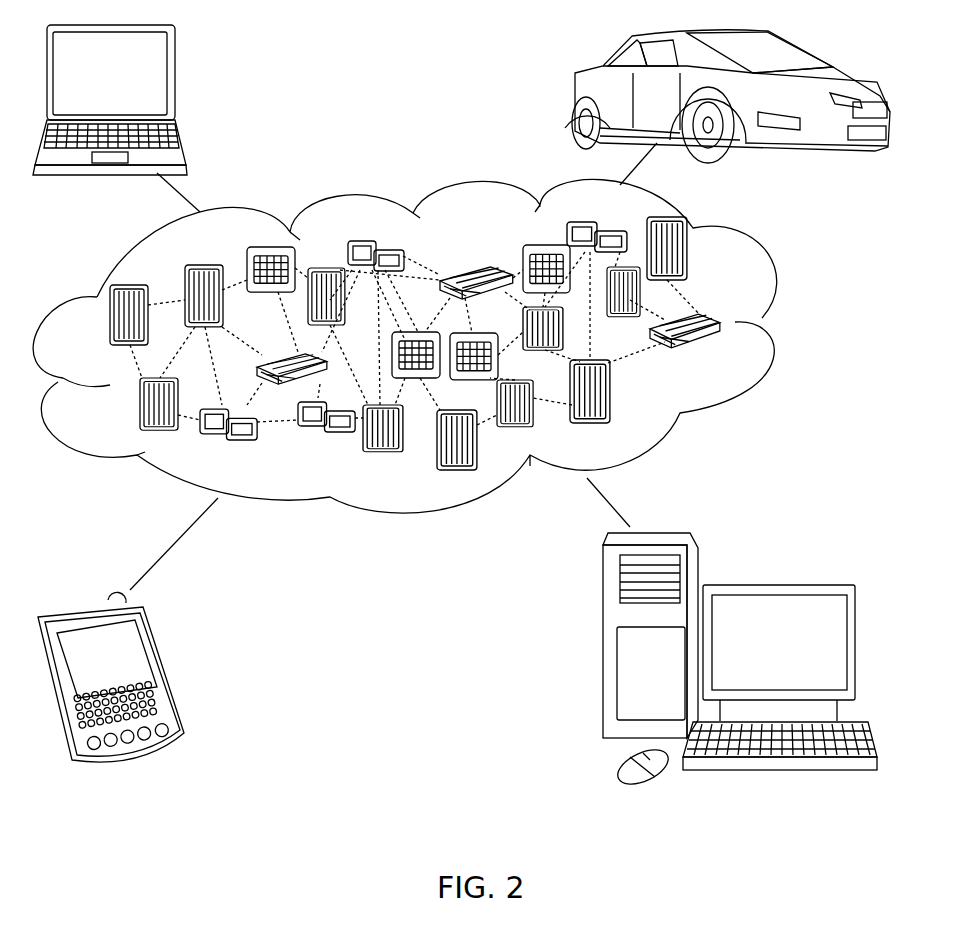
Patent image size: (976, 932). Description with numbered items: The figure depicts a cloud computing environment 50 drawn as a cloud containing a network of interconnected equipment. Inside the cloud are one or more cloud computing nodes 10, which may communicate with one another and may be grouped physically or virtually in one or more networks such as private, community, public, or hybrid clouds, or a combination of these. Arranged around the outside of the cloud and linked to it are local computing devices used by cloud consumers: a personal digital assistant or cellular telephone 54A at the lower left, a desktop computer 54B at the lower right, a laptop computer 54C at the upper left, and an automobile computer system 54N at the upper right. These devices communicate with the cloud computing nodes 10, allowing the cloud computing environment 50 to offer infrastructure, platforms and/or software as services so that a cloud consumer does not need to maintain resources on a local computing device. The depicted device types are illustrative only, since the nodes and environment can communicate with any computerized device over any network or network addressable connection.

The cloud computing node 10 is at (734, 308).
The cloud computing environment 50 is at (433, 346).
The personal digital assistant or cellular telephone 54A is at (163, 663).
The desktop computer 54B is at (790, 563).
The laptop computer 54C is at (174, 78).
The automobile computer system 54N is at (578, 97).